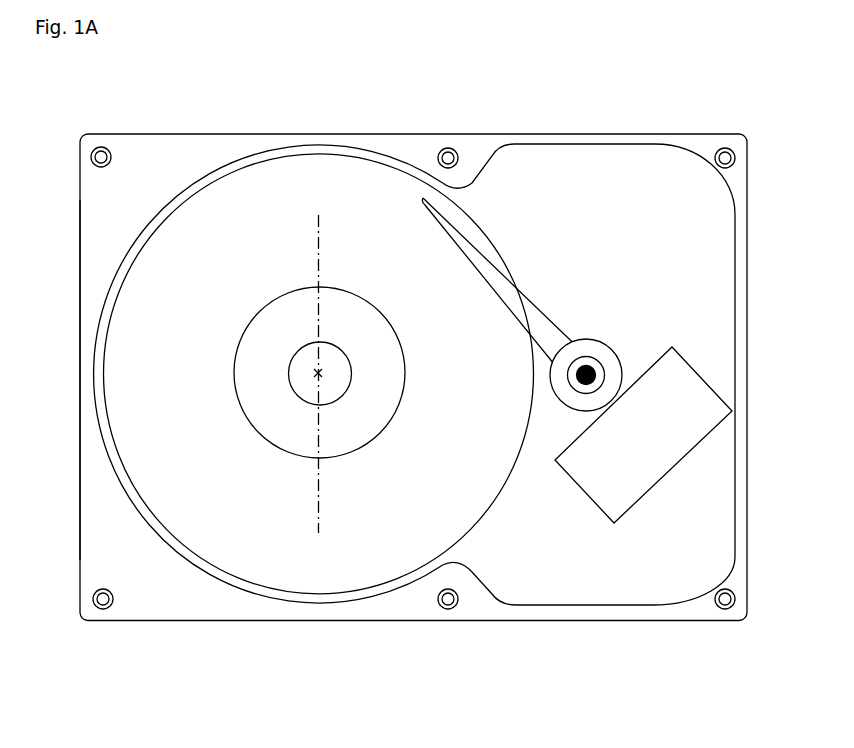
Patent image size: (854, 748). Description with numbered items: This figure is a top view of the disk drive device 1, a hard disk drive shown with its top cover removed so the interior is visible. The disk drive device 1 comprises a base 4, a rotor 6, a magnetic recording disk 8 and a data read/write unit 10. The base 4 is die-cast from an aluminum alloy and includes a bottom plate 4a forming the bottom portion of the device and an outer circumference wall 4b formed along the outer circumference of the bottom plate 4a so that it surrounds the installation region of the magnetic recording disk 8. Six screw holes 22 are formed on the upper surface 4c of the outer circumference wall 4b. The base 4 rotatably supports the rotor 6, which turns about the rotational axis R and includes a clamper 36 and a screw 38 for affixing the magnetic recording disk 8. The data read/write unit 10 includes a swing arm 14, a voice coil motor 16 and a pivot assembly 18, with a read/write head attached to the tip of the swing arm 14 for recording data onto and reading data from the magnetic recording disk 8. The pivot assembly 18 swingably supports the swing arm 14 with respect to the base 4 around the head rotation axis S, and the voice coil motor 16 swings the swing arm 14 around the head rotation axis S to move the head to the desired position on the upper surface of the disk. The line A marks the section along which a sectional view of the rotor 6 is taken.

The disk drive device 1 is at (427, 714).
The base 4 is at (748, 273).
The bottom plate 4a is at (540, 178).
The outer circumference wall 4b is at (176, 160).
The upper surface 4c is at (90, 204).
The rotor 6 is at (305, 433).
The magnetic recording disk 8 is at (318, 193).
The data read/write unit 10 is at (629, 360).
The swing arm 14 is at (548, 315).
The voice coil motor 16 is at (674, 435).
The pivot assembly 18 is at (610, 358).
The screw holes 22 is at (101, 147).
The clamper 36 is at (265, 357).
The screw 38 is at (318, 373).
The rotational axis R is at (312, 377).
The head rotation axis S is at (590, 383).
The line A- A is at (323, 252).